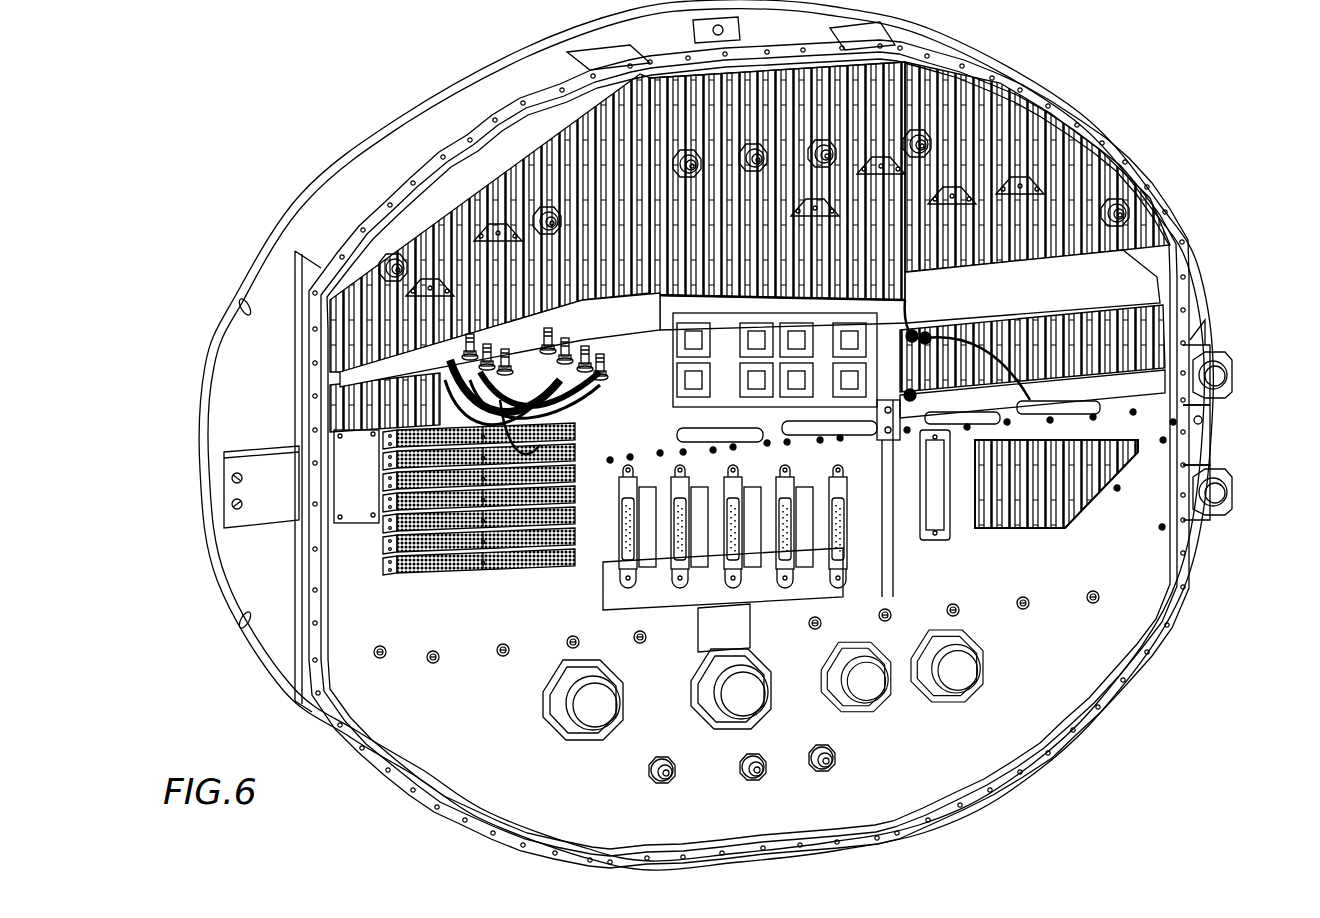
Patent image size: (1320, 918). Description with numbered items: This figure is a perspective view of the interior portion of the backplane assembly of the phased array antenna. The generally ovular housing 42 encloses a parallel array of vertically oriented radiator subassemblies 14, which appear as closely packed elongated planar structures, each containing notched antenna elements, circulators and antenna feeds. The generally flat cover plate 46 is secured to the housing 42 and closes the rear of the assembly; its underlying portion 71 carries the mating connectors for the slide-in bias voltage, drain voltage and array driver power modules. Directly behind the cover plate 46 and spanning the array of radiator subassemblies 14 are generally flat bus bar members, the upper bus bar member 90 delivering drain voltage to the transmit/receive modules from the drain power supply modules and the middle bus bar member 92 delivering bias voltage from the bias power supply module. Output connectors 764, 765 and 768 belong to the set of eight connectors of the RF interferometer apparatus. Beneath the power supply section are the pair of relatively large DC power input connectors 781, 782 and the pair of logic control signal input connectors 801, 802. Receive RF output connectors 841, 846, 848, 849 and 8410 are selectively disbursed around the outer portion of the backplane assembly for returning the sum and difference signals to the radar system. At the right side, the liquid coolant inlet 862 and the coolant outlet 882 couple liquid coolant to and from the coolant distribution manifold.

The housing 42 is at (365, 148).
The radiator subassembly 14 is at (780, 295).
The cover plate 46 is at (1125, 582).
The underlying portion of the cover plate 71 is at (796, 558).
The bus bar member 90 is at (1147, 290).
The bus bar member 92 is at (1145, 388).
The receive RF output connector 841 is at (397, 260).
The receive RF output connector 846 is at (920, 133).
The receive RF output connector 848 is at (648, 764).
The receive RF output connector 849 is at (757, 781).
The receive RF output connector 8410 is at (838, 768).
The output connector 764 is at (466, 337).
The output connector 765 is at (553, 325).
The output connector 768 is at (606, 356).
The DC power input connector 781 is at (565, 693).
The DC power input connector 782 is at (700, 684).
The logic control signal input connector 801 is at (870, 693).
The logic control signal input connector 802 is at (972, 678).
The liquid coolant inlet 862 is at (1220, 372).
The coolant outlet 882 is at (1222, 497).